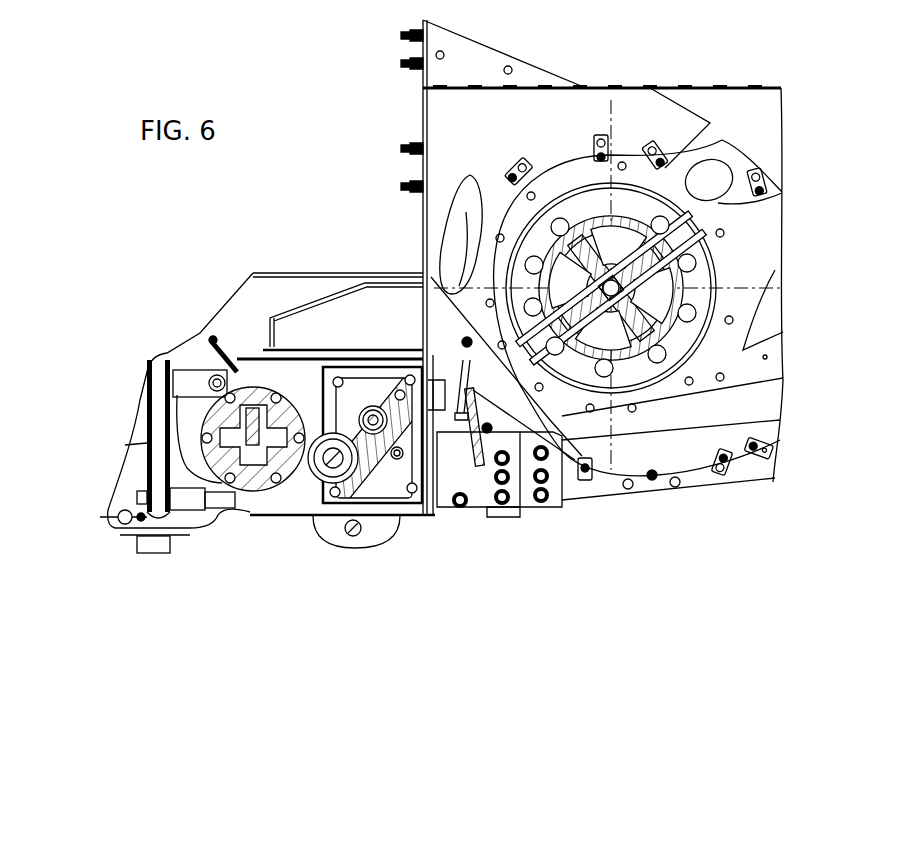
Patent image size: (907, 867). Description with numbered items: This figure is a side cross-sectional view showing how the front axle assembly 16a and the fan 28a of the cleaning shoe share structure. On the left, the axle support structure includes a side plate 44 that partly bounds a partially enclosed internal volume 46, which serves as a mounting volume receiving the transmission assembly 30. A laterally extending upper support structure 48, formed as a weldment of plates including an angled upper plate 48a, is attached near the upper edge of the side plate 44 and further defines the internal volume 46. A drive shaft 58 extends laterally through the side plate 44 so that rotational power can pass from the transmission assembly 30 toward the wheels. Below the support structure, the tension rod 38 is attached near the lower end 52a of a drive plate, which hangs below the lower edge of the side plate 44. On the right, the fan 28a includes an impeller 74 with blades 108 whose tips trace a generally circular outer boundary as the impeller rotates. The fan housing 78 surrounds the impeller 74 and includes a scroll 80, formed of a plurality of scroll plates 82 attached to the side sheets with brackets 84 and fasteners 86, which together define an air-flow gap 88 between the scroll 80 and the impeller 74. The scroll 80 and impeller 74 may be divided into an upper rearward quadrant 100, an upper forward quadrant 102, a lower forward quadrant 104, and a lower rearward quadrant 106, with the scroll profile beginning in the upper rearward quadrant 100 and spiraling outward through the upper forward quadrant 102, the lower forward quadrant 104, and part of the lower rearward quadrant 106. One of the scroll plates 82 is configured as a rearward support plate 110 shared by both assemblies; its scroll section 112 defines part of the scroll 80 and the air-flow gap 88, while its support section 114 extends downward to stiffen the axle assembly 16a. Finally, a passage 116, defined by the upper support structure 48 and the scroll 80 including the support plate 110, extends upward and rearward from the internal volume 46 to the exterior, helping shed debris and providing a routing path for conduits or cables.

The axle assembly 16a is at (96, 481).
The fan 28a is at (816, 160).
The transmission assembly 30 is at (270, 524).
The tension rod 38 is at (355, 538).
The side plate 44 is at (210, 331).
The internal volume 46 is at (295, 542).
The upper support structure 48 is at (395, 272).
The angled upper plate 48a is at (322, 301).
The lower end of drive plate 52a is at (376, 547).
The drive shaft 58 is at (205, 445).
The impeller 74 is at (681, 357).
The fan housing 78 is at (600, 87).
The scroll 80 is at (508, 192).
The scroll plates 82 is at (548, 178).
The brackets 84 is at (605, 140).
The fasteners 86 is at (600, 156).
The air-flow gap 88 is at (501, 240).
The upper rearward quadrant 100 is at (652, 201).
The upper forward quadrant 102 is at (603, 201).
The lower forward quadrant 104 is at (566, 318).
The lower rearward quadrant 106 is at (611, 344).
The blades 108 is at (640, 292).
The rearward support plate 110 is at (496, 402).
The scroll section 112 is at (462, 438).
The support section 114 is at (533, 507).
The passage 116 is at (445, 338).